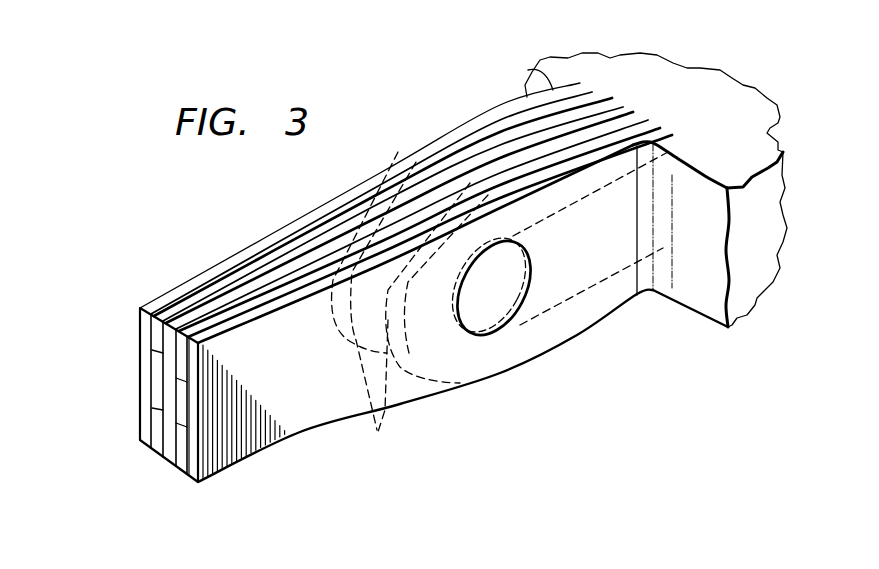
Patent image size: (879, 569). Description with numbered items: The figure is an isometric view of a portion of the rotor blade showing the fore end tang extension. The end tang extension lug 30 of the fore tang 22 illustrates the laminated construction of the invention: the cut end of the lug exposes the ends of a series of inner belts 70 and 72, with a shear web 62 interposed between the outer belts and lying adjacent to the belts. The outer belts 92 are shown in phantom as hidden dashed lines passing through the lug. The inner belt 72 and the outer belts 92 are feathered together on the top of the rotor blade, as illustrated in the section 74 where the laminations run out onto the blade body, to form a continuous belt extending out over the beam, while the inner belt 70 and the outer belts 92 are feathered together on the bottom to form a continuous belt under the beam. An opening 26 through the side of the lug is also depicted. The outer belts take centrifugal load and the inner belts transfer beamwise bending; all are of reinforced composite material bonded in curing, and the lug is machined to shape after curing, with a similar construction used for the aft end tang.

The fore tang 22 is at (447, 128).
The attachment opening 26 is at (490, 313).
The end tang extension lug 30 is at (222, 240).
The shear web 62 is at (190, 348).
The inner belt 70 is at (180, 467).
The inner belt 72 is at (180, 382).
The section 74 is at (700, 80).
The outer belts 92 is at (377, 431).